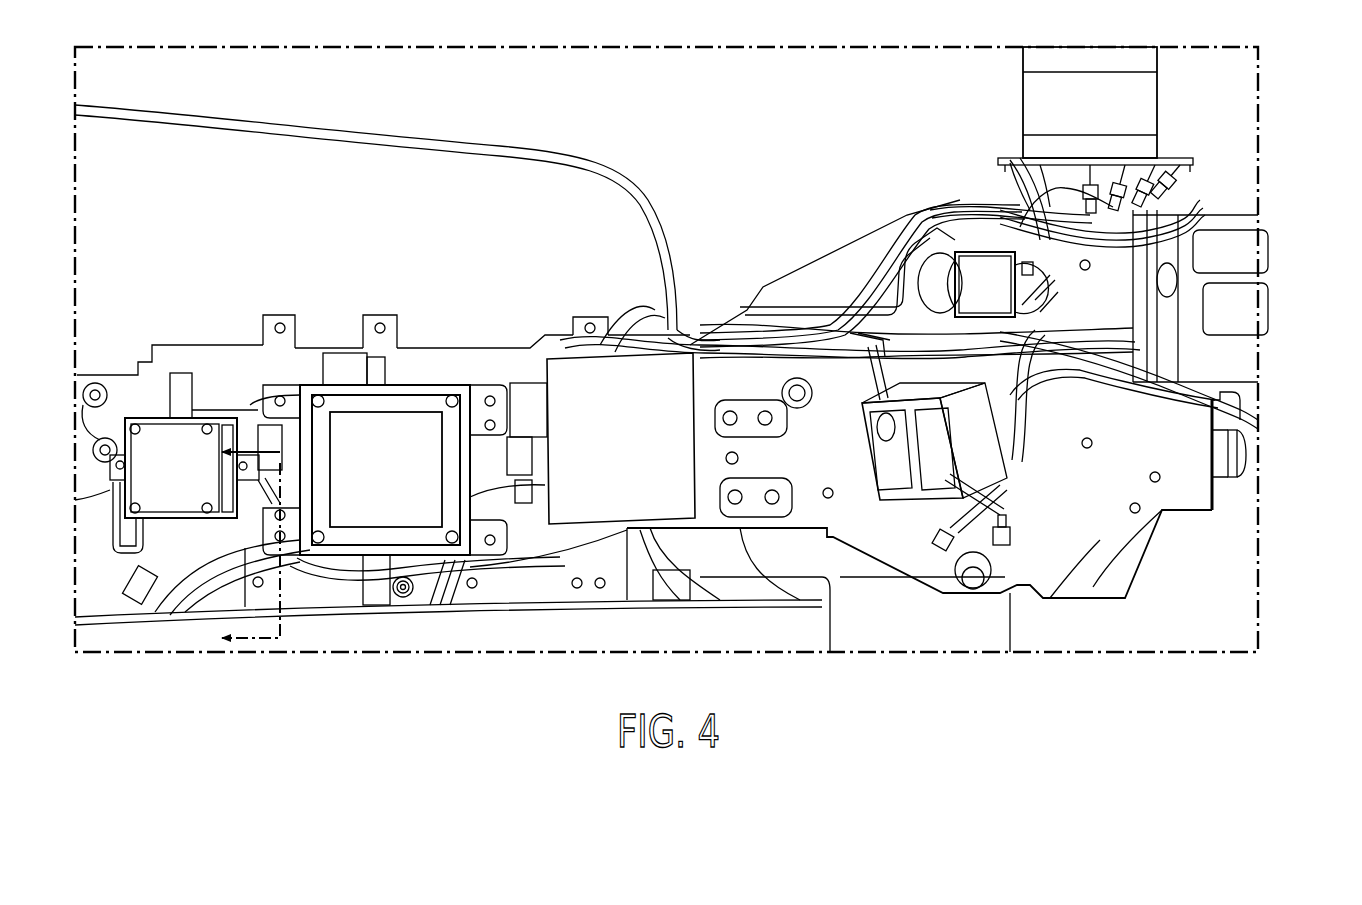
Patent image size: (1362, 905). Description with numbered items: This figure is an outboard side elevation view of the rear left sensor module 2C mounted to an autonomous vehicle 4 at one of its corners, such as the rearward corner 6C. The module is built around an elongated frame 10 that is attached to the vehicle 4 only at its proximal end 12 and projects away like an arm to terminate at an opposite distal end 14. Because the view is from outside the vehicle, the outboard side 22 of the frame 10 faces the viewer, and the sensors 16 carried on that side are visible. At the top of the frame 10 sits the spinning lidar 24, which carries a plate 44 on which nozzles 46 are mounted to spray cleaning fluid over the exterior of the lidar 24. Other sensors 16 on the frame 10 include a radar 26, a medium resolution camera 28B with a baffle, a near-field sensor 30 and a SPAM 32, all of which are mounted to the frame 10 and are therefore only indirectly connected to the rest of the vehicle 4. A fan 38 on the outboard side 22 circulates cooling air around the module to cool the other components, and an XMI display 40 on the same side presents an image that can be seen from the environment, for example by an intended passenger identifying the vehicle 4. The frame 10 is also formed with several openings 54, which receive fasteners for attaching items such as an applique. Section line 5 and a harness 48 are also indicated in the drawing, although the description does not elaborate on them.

The rear left sensor module 2C is at (725, 120).
The vehicle 4 is at (422, 638).
The section line 5 is at (237, 547).
The rearward right corner 6C is at (327, 622).
The frame 10 is at (800, 283).
The proximal end 12 is at (95, 352).
The distal end 14 is at (1274, 333).
The sensors 16 is at (906, 343).
The outboard side 22 is at (488, 365).
The lidar 24 is at (1035, 95).
The radar 26 is at (1230, 240).
The medium resolution camera 28B is at (983, 263).
The near-field sensor 30 is at (990, 477).
The SPAM 32 is at (570, 365).
The fan 38 is at (140, 487).
The XMI display 40 is at (360, 435).
The plate 44 is at (1058, 158).
The nozzles 46 is at (1120, 168).
The harness 48 is at (1020, 160).
The openings 54 is at (280, 323).